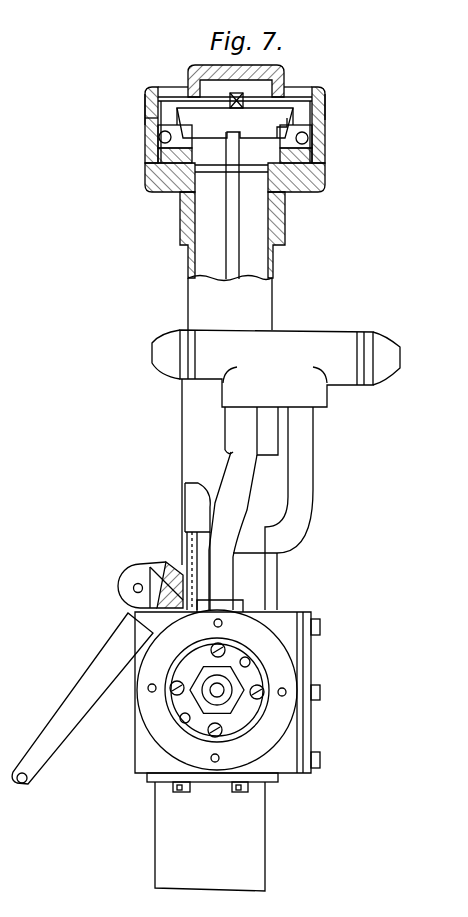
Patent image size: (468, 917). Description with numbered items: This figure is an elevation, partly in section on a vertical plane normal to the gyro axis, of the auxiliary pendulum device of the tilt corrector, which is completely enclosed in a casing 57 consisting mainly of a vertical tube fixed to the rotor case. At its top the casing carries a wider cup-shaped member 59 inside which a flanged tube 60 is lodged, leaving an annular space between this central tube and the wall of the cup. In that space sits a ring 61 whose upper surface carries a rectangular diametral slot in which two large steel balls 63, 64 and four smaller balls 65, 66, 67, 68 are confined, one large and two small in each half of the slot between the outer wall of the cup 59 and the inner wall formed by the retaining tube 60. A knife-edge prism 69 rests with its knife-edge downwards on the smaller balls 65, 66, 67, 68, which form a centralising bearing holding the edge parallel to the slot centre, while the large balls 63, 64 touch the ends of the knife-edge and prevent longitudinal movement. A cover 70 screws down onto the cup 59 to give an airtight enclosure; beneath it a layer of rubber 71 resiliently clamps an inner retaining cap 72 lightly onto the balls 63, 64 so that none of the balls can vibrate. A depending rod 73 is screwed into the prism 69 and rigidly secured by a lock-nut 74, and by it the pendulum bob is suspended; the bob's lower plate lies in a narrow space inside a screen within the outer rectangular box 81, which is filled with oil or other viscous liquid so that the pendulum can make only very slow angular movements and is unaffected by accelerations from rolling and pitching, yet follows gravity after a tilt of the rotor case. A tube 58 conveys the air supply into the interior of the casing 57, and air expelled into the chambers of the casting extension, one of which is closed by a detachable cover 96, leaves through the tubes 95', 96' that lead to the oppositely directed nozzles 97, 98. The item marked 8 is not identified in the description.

The bearing housing 8 is at (287, 92).
The casing 57 is at (180, 237).
The tube 58 is at (113, 655).
The cup-shaped member 59 is at (320, 177).
The flanged tube 60 is at (150, 165).
The ring 61 is at (170, 154).
The large steel ball 63 is at (159, 137).
The large steel ball 64 is at (313, 141).
The smaller ball 65 is at (147, 120).
The smaller ball 66 is at (152, 118).
The smaller ball 67 is at (328, 117).
The smaller ball 68 is at (314, 135).
The knife-edge prism 69 is at (270, 121).
The cover 70 is at (212, 72).
The layer of rubber 71 is at (183, 122).
The inner retaining cap 72 is at (190, 110).
The depending rod 73 is at (225, 194).
The lock-nut 74 is at (256, 90).
The outer rectangular box 81 is at (238, 842).
The tube 95' is at (313, 508).
The detachable cover 96 is at (259, 691).
The tube 96' is at (195, 508).
The nozzle 97 is at (378, 343).
The nozzle 98 is at (162, 350).